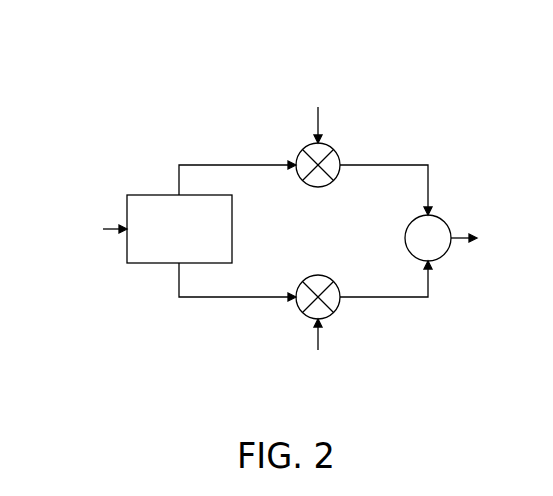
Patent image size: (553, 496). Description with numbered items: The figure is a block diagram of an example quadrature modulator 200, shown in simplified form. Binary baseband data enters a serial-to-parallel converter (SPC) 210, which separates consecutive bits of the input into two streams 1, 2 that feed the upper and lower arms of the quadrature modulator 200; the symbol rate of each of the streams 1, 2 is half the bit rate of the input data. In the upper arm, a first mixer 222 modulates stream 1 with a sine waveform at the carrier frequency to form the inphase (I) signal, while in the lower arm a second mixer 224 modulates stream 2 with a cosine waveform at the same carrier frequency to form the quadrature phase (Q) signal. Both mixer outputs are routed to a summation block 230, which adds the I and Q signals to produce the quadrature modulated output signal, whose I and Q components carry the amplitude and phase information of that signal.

The quadrature modulator 200 is at (200, 69).
The serial-to-parallel converter (SPC) 210 is at (160, 253).
The stream 1 is at (237, 165).
The stream 2 is at (237, 297).
The first mixer 222 is at (331, 178).
The second mixer 224 is at (335, 282).
The summation block 230 is at (448, 222).